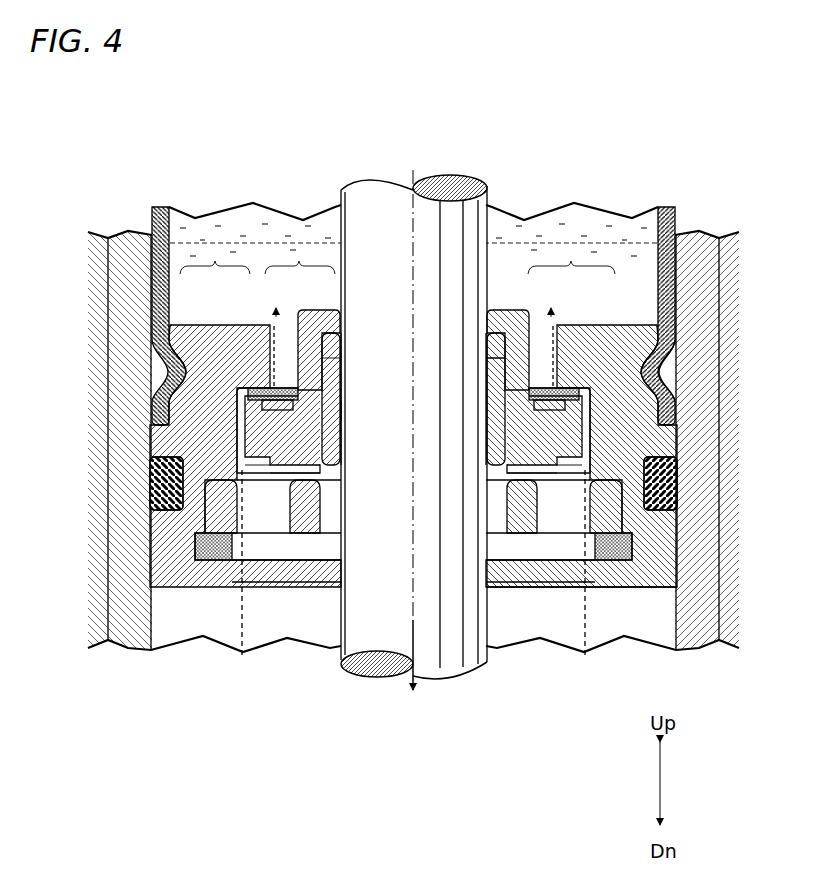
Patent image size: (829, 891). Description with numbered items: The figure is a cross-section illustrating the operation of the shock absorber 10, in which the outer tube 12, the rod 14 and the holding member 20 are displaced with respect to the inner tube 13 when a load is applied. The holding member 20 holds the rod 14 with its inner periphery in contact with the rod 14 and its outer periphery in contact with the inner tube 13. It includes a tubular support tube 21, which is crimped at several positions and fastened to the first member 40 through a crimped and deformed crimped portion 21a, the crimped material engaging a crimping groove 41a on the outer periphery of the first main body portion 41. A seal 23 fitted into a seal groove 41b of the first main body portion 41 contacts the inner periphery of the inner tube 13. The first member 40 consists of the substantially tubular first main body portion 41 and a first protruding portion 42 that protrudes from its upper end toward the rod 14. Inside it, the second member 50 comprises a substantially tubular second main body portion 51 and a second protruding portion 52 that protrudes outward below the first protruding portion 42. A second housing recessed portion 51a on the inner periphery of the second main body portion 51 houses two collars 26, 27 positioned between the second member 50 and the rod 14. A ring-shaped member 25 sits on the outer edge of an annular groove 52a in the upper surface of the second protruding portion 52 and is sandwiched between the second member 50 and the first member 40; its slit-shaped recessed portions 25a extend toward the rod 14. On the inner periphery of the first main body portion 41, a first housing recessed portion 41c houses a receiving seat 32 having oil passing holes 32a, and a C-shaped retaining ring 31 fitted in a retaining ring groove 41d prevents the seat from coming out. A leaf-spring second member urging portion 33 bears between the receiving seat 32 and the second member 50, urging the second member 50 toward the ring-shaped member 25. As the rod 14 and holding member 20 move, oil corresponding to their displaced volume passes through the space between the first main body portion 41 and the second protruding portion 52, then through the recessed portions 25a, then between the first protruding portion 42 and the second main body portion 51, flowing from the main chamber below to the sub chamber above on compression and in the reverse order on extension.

The sealing device 10 is at (106, 150).
The outer tube 12 is at (97, 233).
The inner tube 13 is at (132, 233).
The rod 14 is at (456, 189).
The holding member 20 is at (252, 249).
The support tube 21 is at (157, 206).
The crimped portion 21a is at (158, 376).
The seal 23 is at (170, 490).
The ring-shaped member 25 is at (284, 386).
The recessed portion 25a is at (290, 405).
The collar 26 is at (341, 410).
The collar 27 is at (340, 385).
The retaining ring 31 is at (218, 561).
The receiving seat 32 is at (212, 512).
The oil passing hole 32a is at (253, 526).
The second member urging portion 33 is at (270, 481).
The first member 40 is at (215, 257).
The first main body portion 41 is at (213, 325).
The crimping groove 41a is at (640, 362).
The seal groove 41b is at (655, 468).
The first housing recessed portion 41c is at (590, 490).
The retaining ring groove 41d is at (623, 558).
The first protruding portion 42 is at (256, 325).
The second member 50 is at (300, 257).
The second main body portion 51 is at (320, 298).
The second housing recessed portion 51a is at (339, 352).
The second protruding portion 52 is at (251, 386).
The annular groove 52a is at (274, 470).